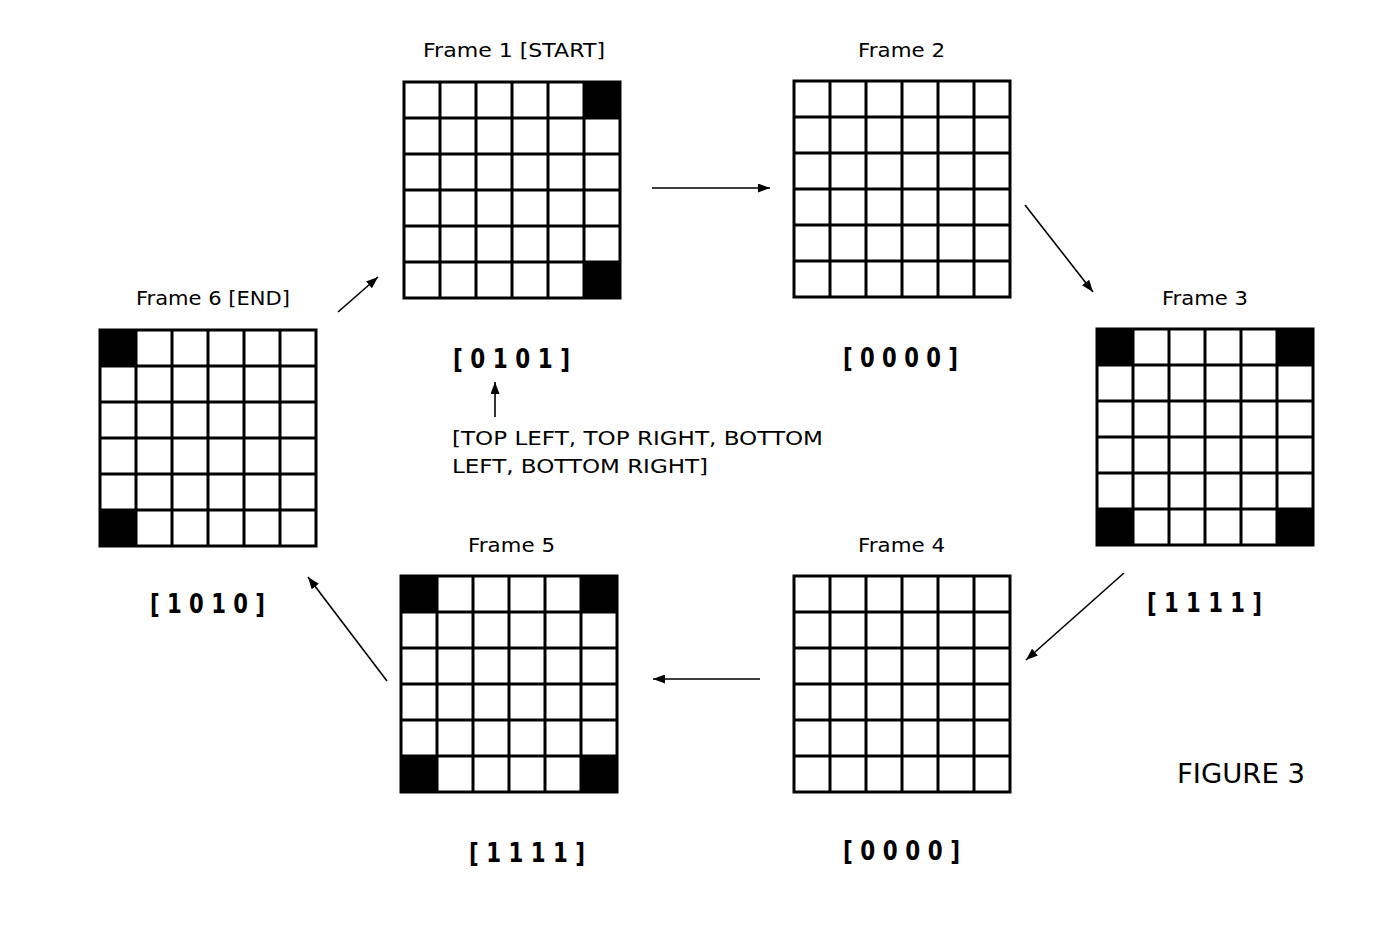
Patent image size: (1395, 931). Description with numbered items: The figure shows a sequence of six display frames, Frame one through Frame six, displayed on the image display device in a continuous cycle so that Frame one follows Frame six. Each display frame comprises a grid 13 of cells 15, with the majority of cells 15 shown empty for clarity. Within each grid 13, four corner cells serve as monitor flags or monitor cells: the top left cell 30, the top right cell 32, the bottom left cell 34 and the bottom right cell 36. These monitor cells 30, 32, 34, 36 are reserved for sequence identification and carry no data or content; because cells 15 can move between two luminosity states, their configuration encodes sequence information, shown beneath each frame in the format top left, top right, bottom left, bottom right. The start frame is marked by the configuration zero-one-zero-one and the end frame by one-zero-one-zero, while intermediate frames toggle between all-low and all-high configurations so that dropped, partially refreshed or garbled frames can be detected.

The grid 13 is at (438, 135).
The cells 15 is at (415, 205).
The top left cell 30 is at (404, 97).
The top right cell 32 is at (621, 93).
The bottom left cell 34 is at (597, 298).
The bottom right cell 36 is at (426, 279).